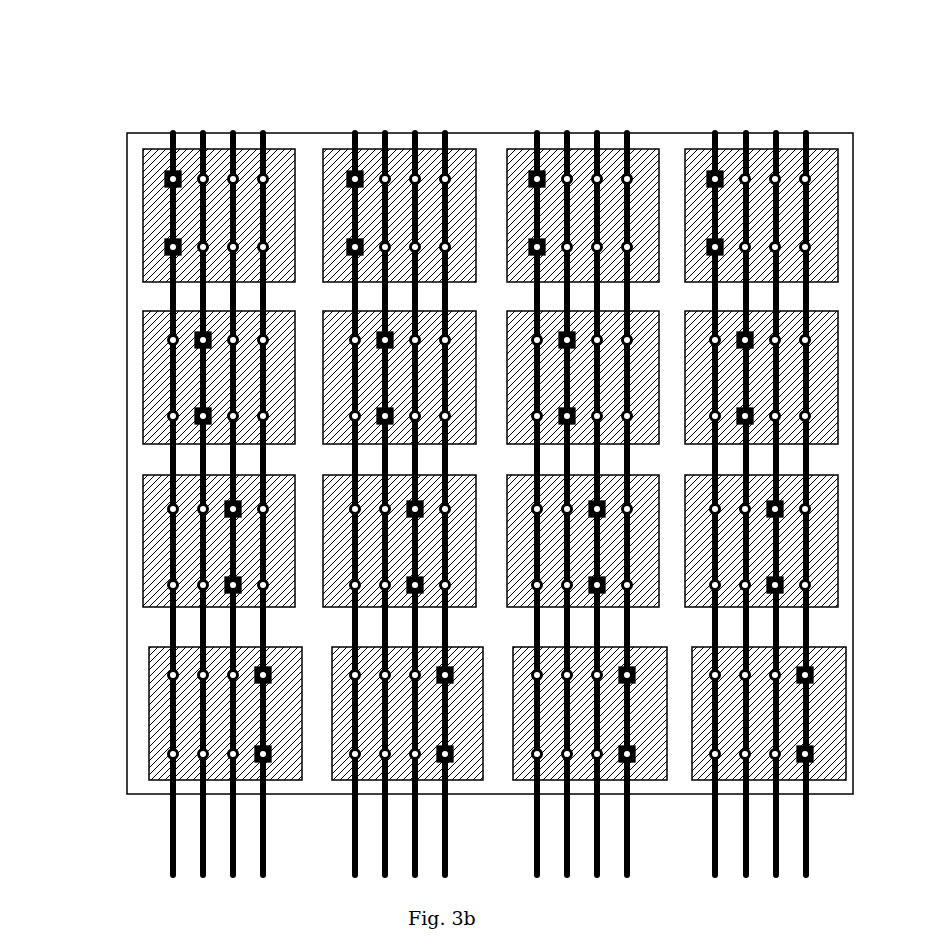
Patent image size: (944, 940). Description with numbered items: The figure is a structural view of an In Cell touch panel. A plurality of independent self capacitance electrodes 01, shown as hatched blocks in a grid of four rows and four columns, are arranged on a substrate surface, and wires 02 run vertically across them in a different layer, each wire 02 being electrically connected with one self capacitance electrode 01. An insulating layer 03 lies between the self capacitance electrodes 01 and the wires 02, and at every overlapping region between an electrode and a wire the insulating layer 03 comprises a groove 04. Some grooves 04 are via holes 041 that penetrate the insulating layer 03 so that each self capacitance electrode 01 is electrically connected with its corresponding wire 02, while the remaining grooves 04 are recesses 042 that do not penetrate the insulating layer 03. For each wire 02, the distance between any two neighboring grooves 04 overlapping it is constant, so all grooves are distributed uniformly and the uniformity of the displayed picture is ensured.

The self capacitance electrode 01 is at (243, 153).
The wire 02 is at (168, 287).
The insulating layer 03 is at (673, 152).
The groove 04 is at (452, 438).
The via hole 041 is at (358, 147).
The recess 042 is at (495, 463).